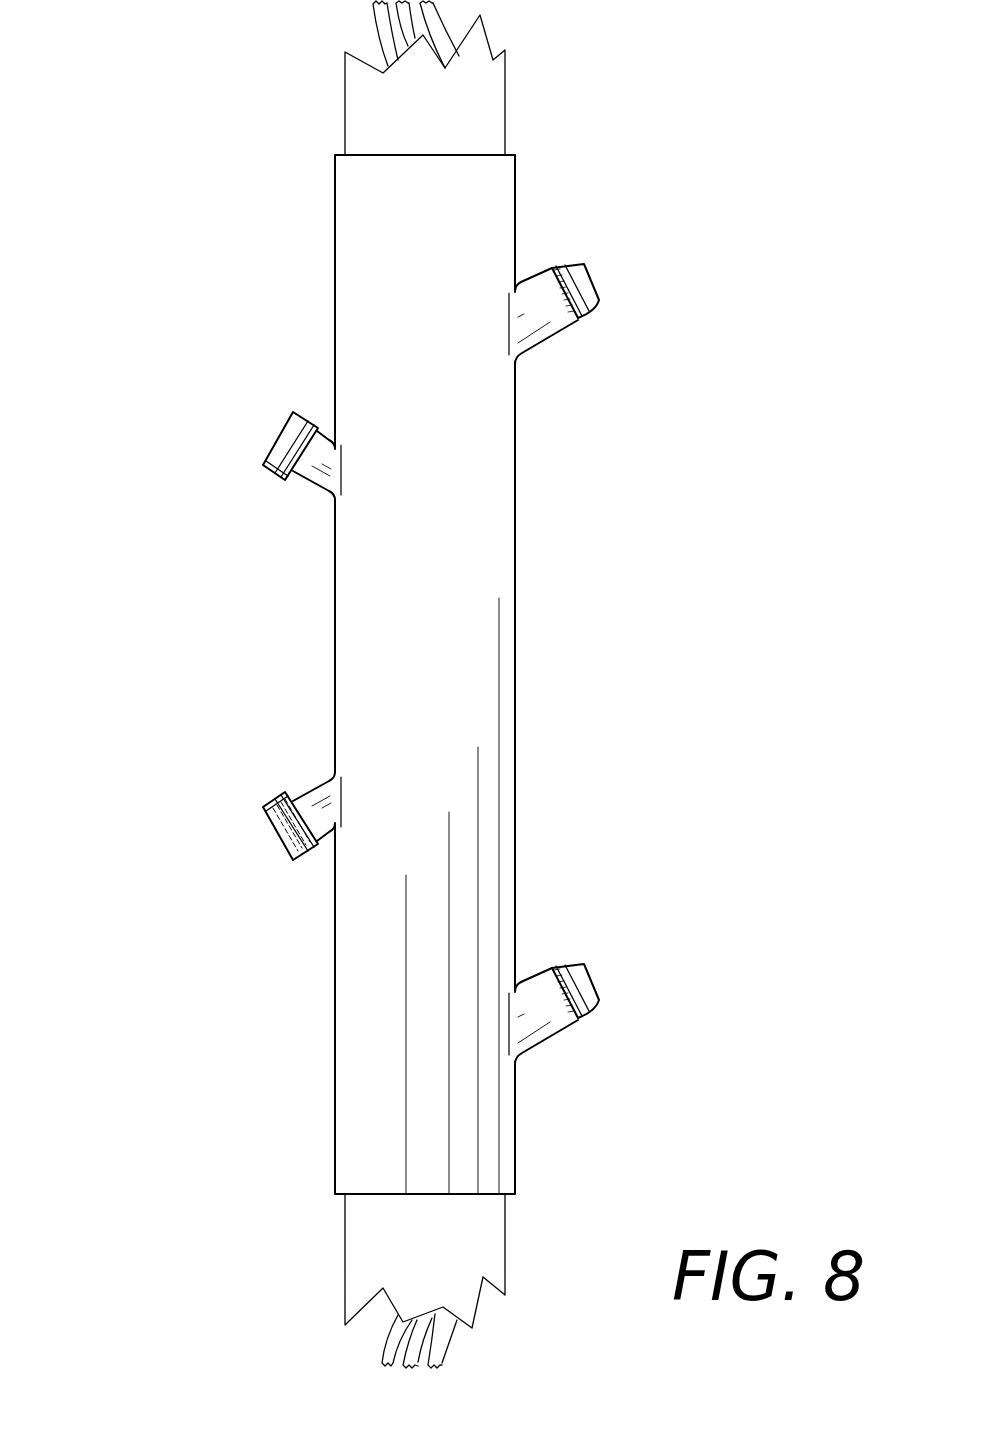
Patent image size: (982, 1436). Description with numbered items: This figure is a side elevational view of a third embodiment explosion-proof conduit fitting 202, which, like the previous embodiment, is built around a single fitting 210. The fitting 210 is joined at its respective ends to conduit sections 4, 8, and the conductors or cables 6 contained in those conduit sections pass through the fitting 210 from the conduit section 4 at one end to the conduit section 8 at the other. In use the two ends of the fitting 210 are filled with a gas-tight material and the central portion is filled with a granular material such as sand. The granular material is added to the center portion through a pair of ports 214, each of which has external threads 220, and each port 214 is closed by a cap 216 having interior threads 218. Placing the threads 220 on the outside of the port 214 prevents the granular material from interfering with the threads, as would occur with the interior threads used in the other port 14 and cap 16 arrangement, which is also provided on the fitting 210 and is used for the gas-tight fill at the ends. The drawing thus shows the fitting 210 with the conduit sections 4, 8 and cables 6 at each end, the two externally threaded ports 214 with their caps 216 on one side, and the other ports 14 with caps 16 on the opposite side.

The third embodiment explosion-proof conduit fitting 202 is at (668, 183).
The single fitting 210 is at (363, 384).
The conduit section 4 is at (365, 145).
The conductors or cables 6 is at (437, 28).
The conduit section 8 is at (383, 1252).
The port 14 is at (548, 333).
The cap 16 is at (582, 287).
The port 214 is at (317, 487).
The cap 216 is at (283, 443).
The interior threads 218 is at (184, 824).
The external threads 220 is at (263, 807).